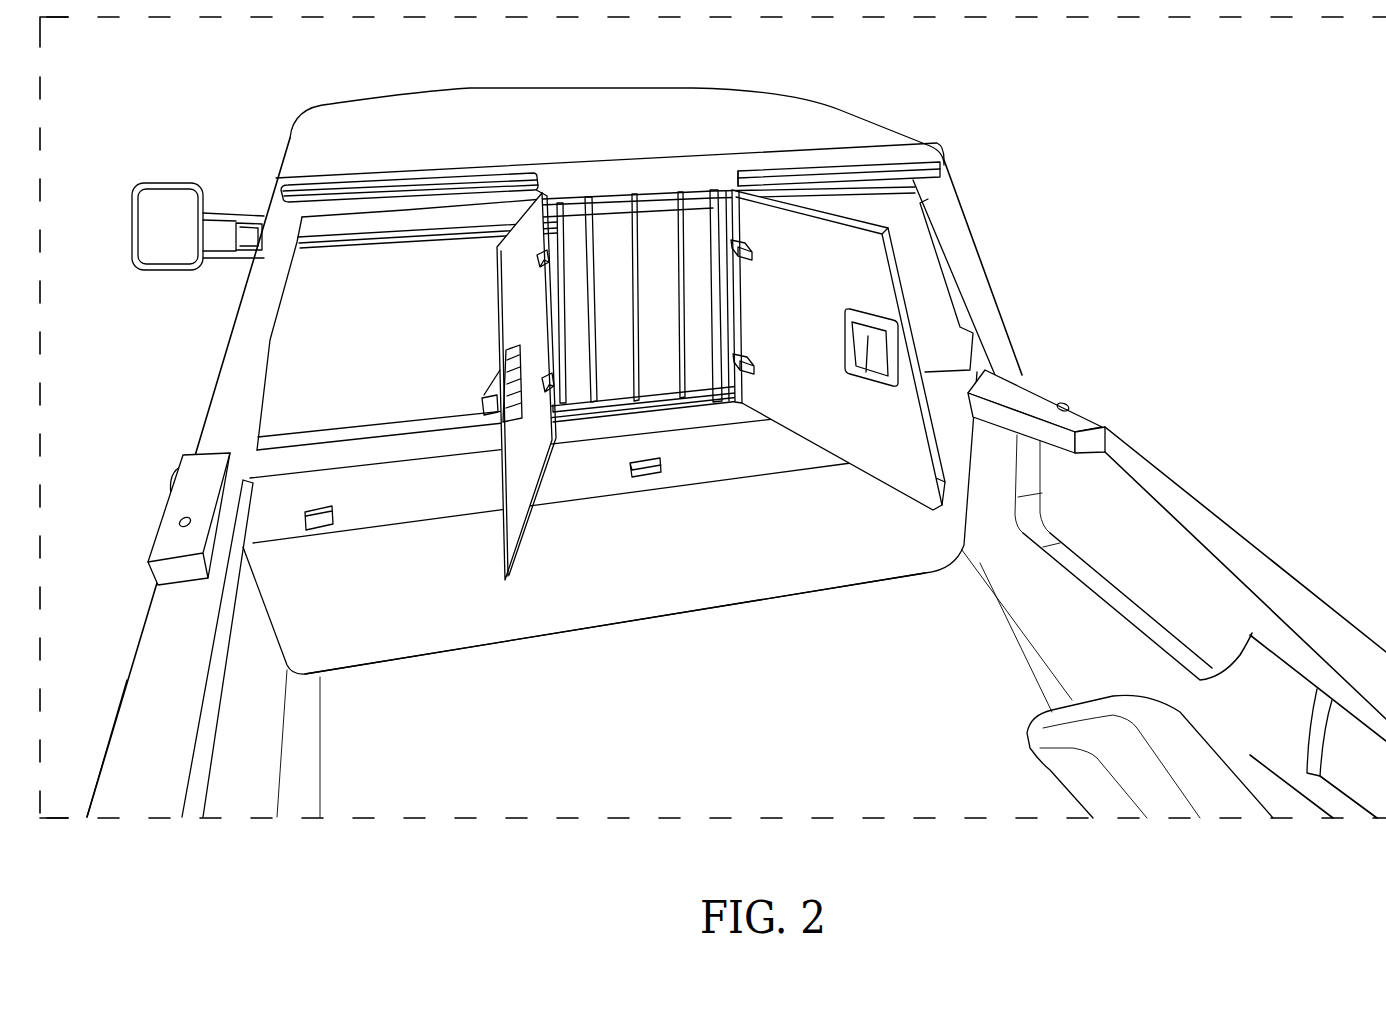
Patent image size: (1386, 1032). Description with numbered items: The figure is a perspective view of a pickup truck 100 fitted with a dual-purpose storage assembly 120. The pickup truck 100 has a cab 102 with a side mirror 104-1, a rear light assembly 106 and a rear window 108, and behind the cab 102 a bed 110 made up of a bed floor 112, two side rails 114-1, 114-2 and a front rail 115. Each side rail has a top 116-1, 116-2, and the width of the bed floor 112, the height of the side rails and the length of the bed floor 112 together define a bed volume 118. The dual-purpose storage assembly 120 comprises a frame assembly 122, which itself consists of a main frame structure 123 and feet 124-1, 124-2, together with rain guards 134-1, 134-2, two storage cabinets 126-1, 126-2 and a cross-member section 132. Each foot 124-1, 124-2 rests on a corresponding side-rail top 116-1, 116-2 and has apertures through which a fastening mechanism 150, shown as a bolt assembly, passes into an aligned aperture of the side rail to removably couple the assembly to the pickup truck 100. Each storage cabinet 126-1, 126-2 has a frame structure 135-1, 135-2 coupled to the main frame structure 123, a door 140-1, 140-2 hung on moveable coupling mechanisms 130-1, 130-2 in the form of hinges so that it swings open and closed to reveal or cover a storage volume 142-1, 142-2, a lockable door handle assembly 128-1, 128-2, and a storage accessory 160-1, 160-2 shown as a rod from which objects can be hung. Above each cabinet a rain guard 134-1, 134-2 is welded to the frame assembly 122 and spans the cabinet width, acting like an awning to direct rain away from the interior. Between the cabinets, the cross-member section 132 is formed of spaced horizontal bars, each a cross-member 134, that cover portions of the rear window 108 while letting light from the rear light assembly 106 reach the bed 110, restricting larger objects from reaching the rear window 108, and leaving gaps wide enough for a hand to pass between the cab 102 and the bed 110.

The pickup truck 100 is at (176, 68).
The cab 102 is at (452, 108).
The side mirror 104-1 is at (165, 182).
The rear light assembly 106 is at (557, 203).
The rear window 108 is at (613, 220).
The bed 110 is at (104, 668).
The bed floor 112 is at (613, 778).
The side rail 114-1 is at (220, 788).
The side rail 114-2 is at (1150, 580).
The front rail 115 is at (367, 580).
The top of side rail 116-1 is at (136, 750).
The top of side rail 116-2 is at (1295, 597).
The bed volume 118 is at (950, 627).
The dual-purpose storage assembly 120 is at (1065, 188).
The frame assembly 122 is at (409, 124).
The main frame structure 123 is at (652, 170).
The foot 124-1 is at (196, 468).
The foot 124-2 is at (1033, 385).
The storage cabinet 126-1 is at (196, 346).
The storage cabinet 126-2 is at (990, 245).
The lockable door handle assembly 128-1 is at (480, 418).
The lockable door handle assembly 128-2 is at (900, 370).
The moveable coupling mechanism 130-1 is at (552, 380).
The moveable coupling mechanism 130-2 is at (733, 352).
The cross-member section 132 is at (706, 418).
The cross-member 134 is at (684, 378).
The rain guard 134-1 is at (330, 190).
The rain guard 134-2 is at (787, 167).
The frame structure 135-1 is at (538, 188).
The frame structure 135-2 is at (714, 195).
The door 140-1 is at (502, 570).
The door 140-2 is at (855, 213).
The storage volume 142-1 is at (312, 262).
The storage volume 142-2 is at (925, 221).
The fastening mechanism 150 is at (178, 518).
The storage accessory 160-1 is at (380, 257).
The storage accessory 160-2 is at (933, 160).